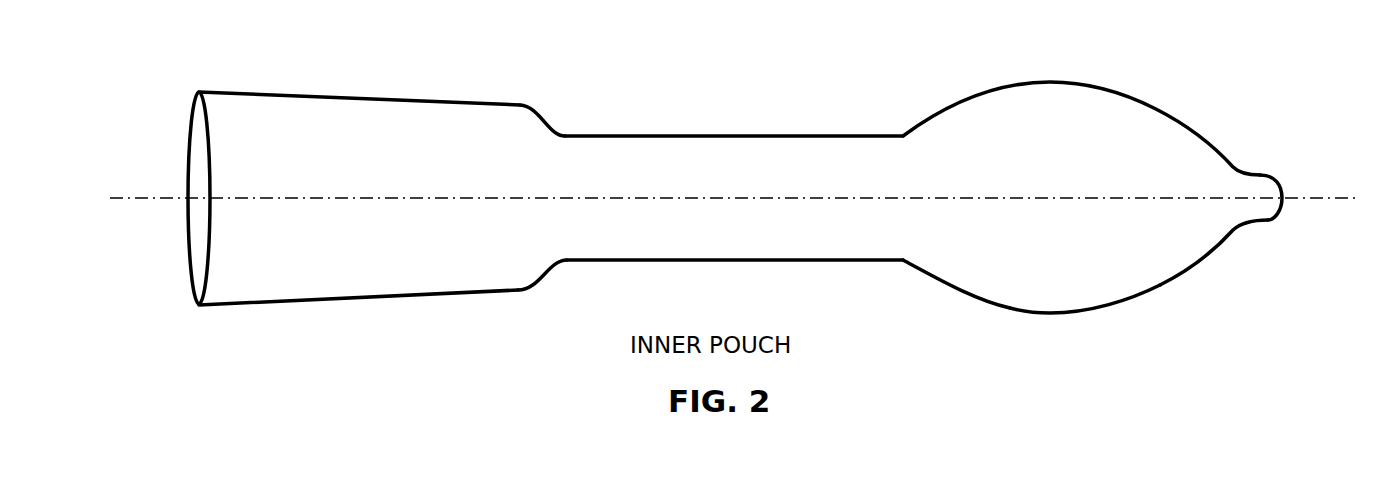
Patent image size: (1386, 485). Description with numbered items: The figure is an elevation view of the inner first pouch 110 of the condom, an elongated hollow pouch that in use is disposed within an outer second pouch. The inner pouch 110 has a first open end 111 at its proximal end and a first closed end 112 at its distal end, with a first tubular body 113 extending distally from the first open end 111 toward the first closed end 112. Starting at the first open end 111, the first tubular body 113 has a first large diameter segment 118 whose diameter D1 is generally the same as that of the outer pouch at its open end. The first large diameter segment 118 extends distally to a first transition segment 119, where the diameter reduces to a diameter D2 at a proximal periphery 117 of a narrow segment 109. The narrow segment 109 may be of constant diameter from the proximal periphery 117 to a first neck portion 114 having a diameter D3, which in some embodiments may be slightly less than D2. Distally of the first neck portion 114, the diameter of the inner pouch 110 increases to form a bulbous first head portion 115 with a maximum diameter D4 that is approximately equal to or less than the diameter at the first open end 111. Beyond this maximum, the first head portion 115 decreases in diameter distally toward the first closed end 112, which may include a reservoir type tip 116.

The narrow segment 109 is at (607, 134).
The inner first pouch 110 is at (1172, 93).
The first open end 111 is at (193, 294).
The first closed end 112 is at (1217, 247).
The first tubular body 113 is at (703, 108).
The first neck portion 114 is at (908, 260).
The bulbous first head portion 115 is at (1068, 313).
The reservoir type tip 116 is at (1270, 220).
The proximal periphery 117 is at (567, 259).
The first large diameter segment 118 is at (432, 102).
The first transition segment 119 is at (543, 112).